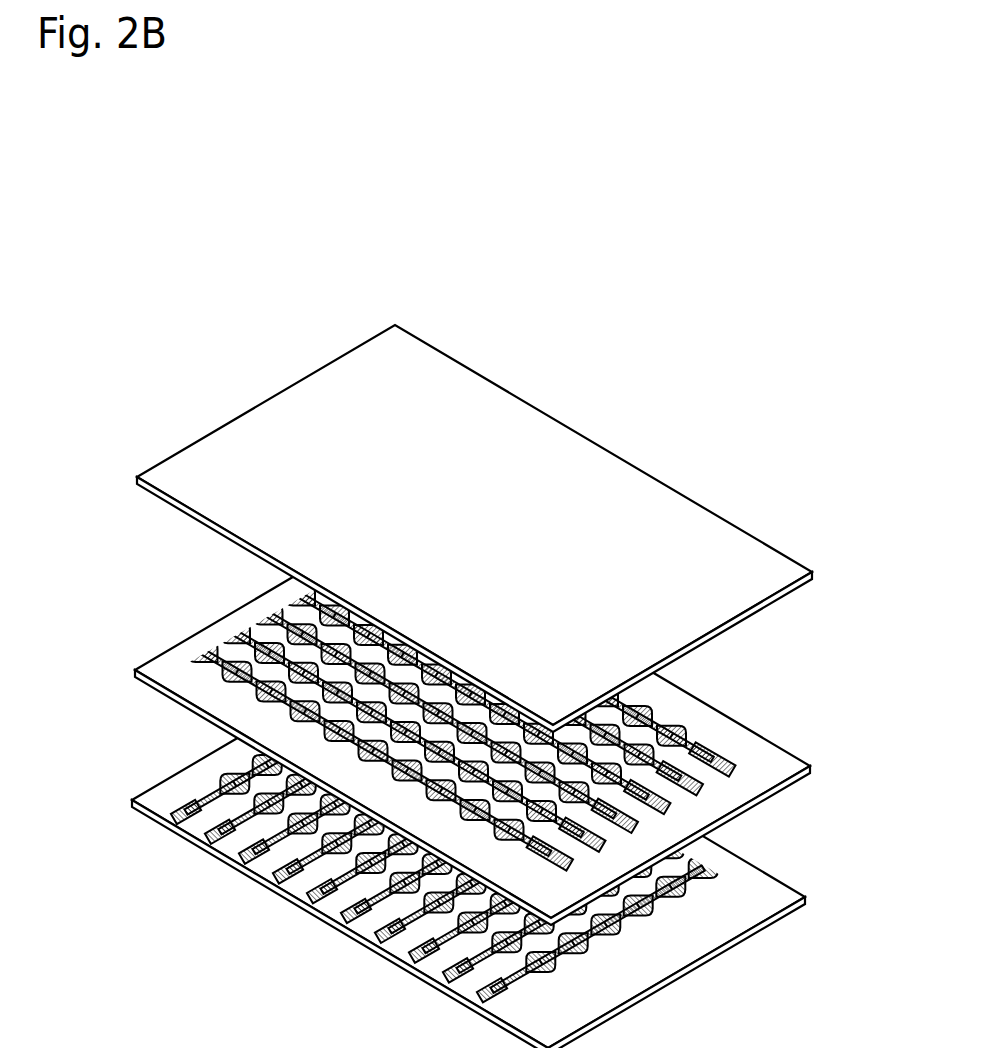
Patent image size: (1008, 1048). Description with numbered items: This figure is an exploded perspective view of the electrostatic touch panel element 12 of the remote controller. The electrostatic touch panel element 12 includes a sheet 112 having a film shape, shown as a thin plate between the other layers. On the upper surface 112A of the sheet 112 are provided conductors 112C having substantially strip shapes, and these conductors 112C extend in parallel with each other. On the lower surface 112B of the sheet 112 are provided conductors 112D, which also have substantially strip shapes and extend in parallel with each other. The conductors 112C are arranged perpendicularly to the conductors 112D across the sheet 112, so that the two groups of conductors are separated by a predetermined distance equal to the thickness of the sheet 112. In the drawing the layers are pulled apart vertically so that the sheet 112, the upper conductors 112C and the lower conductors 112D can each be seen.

The electrostatic touch panel element 12 is at (668, 425).
The sheet 112 is at (505, 783).
The upper surface 112A is at (501, 721).
The lower surface 112B is at (505, 848).
The conductors 112C is at (702, 743).
The conductors 112D is at (450, 968).